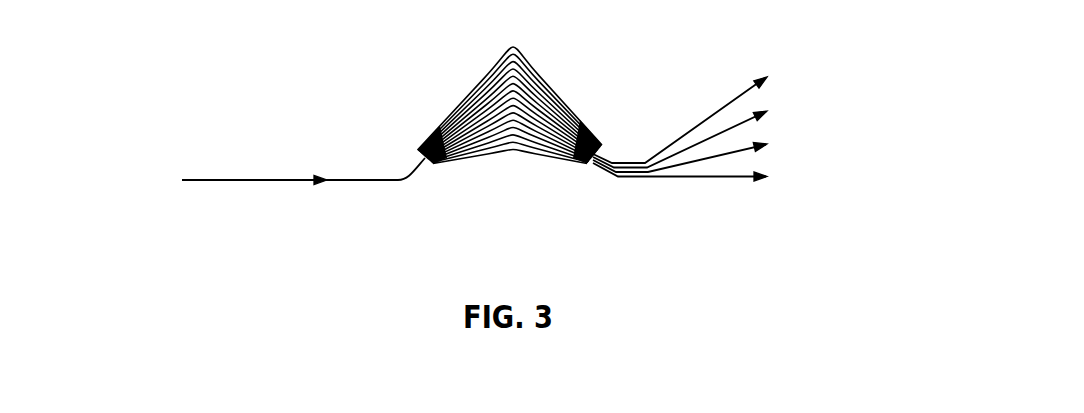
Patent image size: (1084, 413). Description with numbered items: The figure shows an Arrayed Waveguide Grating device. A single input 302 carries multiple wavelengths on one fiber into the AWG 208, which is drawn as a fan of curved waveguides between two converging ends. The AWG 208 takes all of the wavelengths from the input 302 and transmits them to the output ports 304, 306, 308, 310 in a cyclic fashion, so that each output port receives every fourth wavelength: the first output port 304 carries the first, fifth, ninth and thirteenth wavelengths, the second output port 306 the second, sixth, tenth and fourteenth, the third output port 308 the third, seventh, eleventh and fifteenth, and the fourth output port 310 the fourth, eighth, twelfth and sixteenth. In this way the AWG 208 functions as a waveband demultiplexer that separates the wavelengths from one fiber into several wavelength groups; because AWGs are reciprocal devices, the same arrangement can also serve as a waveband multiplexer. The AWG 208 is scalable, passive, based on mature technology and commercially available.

The input 302 is at (243, 179).
The arrayed waveguide grating (AWG) 208 is at (510, 117).
The output port 304 is at (872, 53).
The output port 306 is at (743, 115).
The output port 308 is at (743, 152).
The output port 310 is at (888, 195).